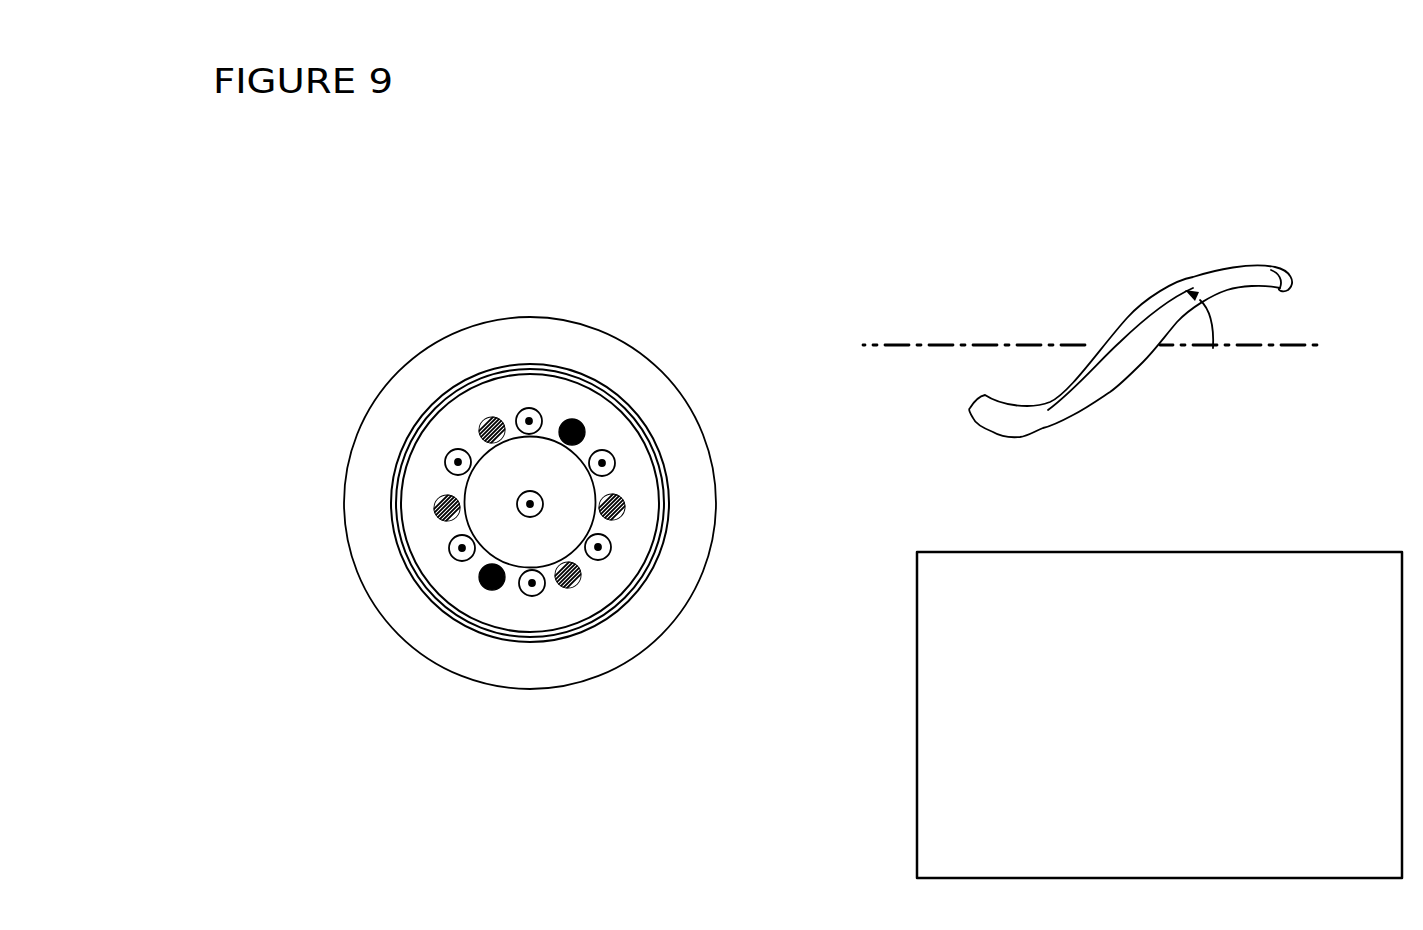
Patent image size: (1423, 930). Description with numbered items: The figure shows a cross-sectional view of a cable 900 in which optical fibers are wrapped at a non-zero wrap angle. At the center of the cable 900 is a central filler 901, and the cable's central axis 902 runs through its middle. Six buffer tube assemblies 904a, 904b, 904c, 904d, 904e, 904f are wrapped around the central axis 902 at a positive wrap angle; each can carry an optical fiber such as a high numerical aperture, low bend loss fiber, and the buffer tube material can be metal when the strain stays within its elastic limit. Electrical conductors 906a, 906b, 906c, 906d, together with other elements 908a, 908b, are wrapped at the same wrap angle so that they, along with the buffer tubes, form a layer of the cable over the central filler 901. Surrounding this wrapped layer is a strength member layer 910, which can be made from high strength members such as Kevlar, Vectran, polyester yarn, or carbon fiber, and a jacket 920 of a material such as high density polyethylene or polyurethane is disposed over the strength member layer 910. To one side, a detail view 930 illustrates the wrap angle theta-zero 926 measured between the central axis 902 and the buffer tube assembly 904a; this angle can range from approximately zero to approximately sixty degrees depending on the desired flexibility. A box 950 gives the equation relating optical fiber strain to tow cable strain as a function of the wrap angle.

The cable 900 is at (505, 465).
The central filler 901 is at (532, 470).
The central axis 902 is at (538, 511).
The buffer tube assembly 904a is at (445, 459).
The buffer tube assembly 904b is at (450, 556).
The buffer tube assembly 904c is at (530, 596).
The buffer tube assembly 904d is at (609, 553).
The buffer tube assembly 904e is at (616, 463).
The buffer tube assembly 904f is at (528, 407).
The electrical conductor 906a is at (487, 417).
The electrical conductor 906b is at (433, 511).
The electrical conductor 906c is at (578, 583).
The electrical conductor 906d is at (625, 511).
The other element 908a is at (481, 589).
The other element 908b is at (579, 420).
The strength member layer 910 is at (415, 420).
The jacket 920 is at (488, 335).
The wrap angle 926 is at (1213, 322).
The wrap angle illustration 930 is at (1262, 208).
The strain equation 950 is at (1233, 552).